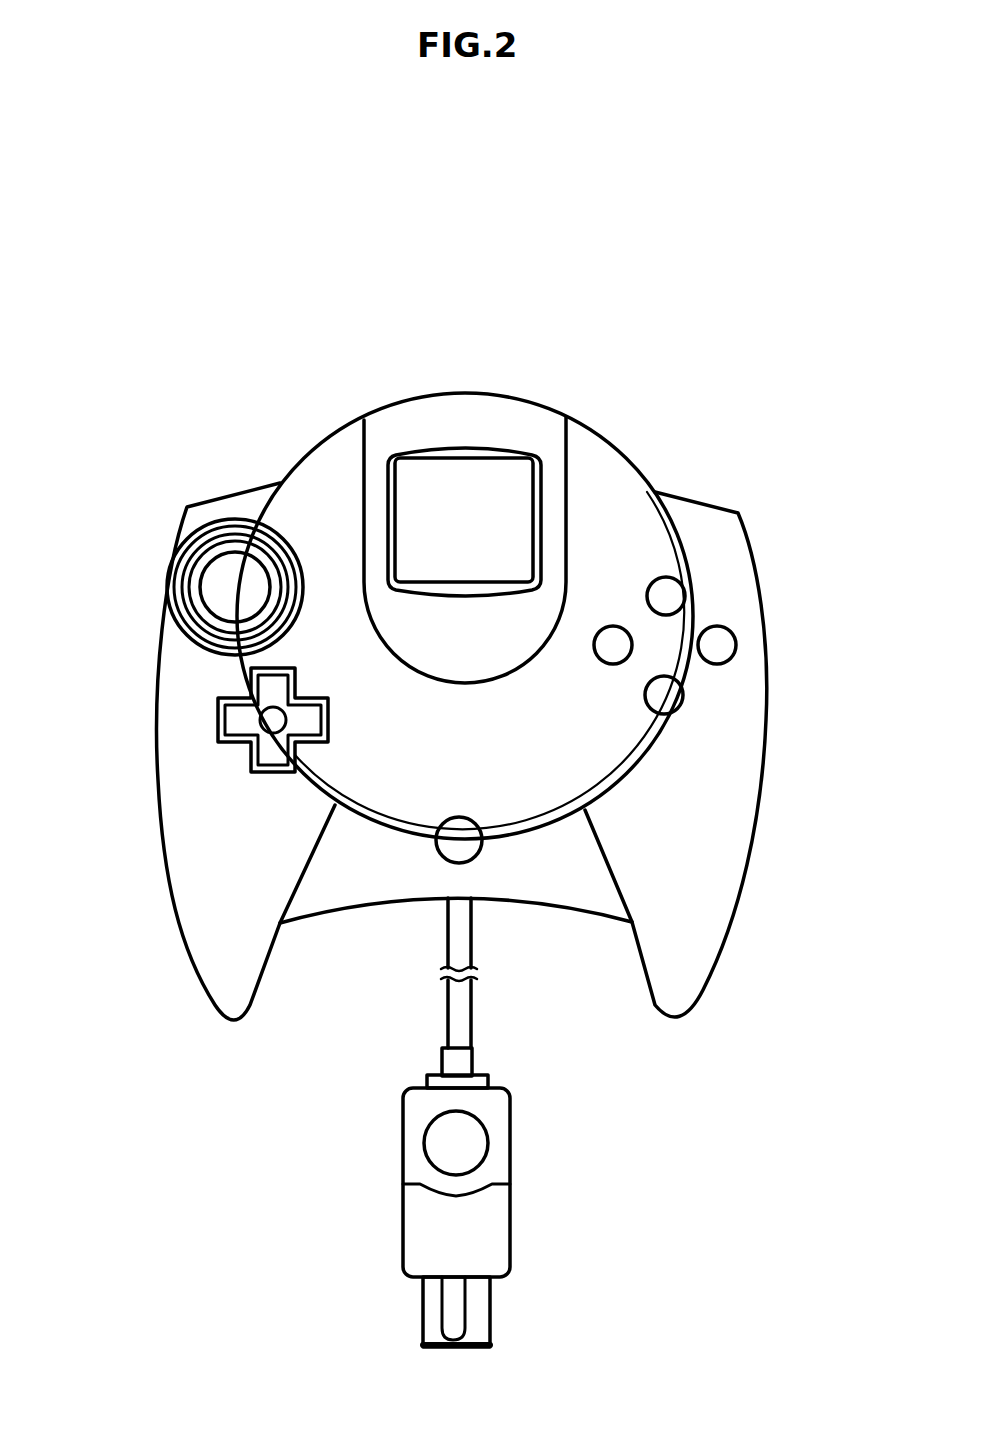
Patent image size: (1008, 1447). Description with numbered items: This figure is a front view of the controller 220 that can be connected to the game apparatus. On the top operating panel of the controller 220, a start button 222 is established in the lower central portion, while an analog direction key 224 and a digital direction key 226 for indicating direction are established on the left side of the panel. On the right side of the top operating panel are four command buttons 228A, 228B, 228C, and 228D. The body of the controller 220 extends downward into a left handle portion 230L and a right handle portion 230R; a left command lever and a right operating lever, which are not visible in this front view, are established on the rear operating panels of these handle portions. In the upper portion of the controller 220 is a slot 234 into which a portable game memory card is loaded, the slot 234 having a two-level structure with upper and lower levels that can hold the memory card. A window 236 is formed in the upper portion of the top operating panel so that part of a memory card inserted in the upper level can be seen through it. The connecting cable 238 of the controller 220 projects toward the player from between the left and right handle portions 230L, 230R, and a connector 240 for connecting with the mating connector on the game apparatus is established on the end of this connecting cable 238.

The controller 220 is at (688, 484).
The start button 222 is at (470, 847).
The analog direction key 224 is at (215, 588).
The digital direction key 226 is at (237, 720).
The command button 228A is at (660, 588).
The command button 228B is at (622, 648).
The command button 228C is at (673, 702).
The command button 228D is at (727, 643).
The handle portion 230L is at (210, 965).
The handle portion 230R is at (692, 983).
The slot 234 is at (380, 411).
The window 236 is at (500, 485).
The connecting cable 238 is at (471, 1008).
The connector 240 is at (517, 1152).